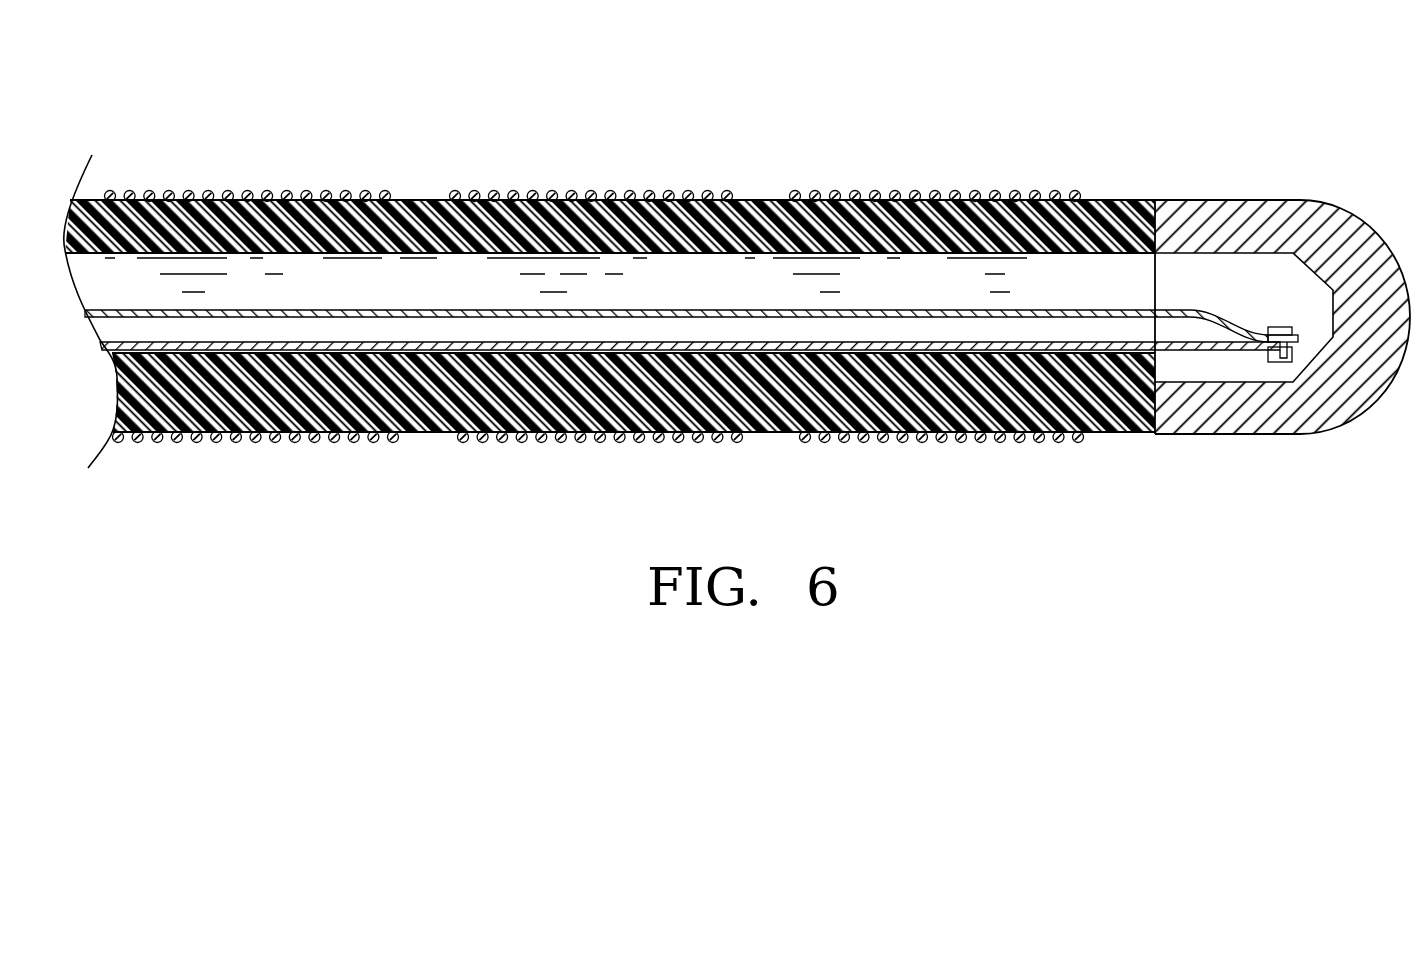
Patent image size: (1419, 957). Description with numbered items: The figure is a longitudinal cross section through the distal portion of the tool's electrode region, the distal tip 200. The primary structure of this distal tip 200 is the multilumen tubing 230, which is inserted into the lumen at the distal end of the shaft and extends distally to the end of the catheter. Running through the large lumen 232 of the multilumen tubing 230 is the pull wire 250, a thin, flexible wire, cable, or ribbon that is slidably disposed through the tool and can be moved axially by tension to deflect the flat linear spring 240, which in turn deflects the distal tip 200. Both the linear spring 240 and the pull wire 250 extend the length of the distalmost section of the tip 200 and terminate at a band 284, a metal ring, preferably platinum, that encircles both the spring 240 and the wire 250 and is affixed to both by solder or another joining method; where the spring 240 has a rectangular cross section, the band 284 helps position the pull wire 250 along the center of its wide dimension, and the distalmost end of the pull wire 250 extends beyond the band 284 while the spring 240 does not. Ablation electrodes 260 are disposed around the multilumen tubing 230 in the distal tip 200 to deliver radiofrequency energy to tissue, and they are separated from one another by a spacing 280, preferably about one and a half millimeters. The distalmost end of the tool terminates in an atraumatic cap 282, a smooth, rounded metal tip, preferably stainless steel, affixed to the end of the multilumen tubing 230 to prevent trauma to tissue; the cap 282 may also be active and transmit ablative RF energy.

The distal tip 200 is at (935, 115).
The multilumen tubing 230 is at (757, 227).
The large lumen 232 is at (1112, 282).
The flat linear spring 240 is at (1255, 353).
The pull wire 250 is at (1228, 318).
The ablation electrodes 260 is at (295, 443).
The spacing 280 is at (395, 184).
The atraumatic cap 282 is at (1343, 222).
The band 284 is at (1277, 325).